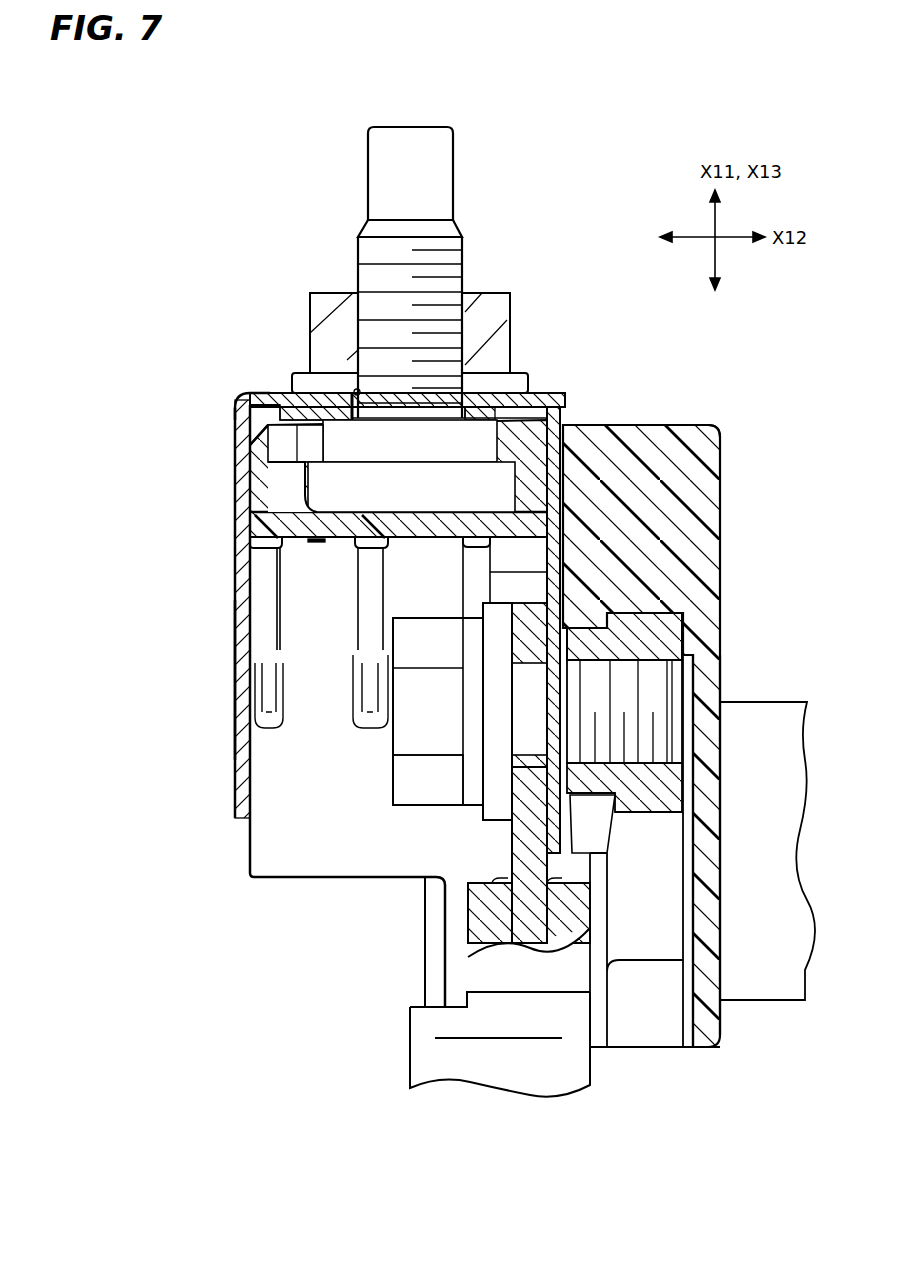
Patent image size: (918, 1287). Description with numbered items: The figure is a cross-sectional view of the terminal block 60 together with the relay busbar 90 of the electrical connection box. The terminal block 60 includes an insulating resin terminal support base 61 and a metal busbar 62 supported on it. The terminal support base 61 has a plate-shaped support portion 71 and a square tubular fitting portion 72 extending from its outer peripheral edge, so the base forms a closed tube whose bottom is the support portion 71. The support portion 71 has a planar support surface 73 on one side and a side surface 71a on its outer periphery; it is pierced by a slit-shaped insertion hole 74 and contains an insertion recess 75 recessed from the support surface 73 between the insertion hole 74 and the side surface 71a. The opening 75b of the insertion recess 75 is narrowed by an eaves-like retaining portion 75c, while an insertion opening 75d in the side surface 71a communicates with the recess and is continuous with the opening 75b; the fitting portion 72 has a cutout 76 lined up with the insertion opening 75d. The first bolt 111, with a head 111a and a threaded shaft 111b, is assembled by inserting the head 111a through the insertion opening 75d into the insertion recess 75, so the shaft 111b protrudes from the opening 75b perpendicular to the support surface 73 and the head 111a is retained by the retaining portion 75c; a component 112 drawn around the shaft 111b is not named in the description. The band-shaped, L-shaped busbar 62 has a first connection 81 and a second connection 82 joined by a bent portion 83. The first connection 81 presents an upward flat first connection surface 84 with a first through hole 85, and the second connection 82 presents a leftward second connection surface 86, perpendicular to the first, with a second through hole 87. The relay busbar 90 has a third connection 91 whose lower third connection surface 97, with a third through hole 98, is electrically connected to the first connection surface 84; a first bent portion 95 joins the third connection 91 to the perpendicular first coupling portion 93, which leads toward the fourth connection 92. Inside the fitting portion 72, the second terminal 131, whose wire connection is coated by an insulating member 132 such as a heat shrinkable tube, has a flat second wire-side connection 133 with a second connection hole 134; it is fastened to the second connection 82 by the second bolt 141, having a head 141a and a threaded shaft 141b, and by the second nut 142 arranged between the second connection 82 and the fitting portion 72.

The terminal block 60 is at (269, 890).
The terminal support base 61 is at (720, 1035).
The busbar 62 is at (280, 410).
The support portion 71 is at (722, 440).
The side surface 71a is at (255, 540).
The fitting portion 72 is at (718, 930).
The support surface 73 is at (683, 425).
The insertion hole 74 is at (540, 497).
The insertion recess 75 is at (413, 514).
The opening 75b is at (497, 432).
The retaining portion 75c is at (520, 395).
The insertion opening 75d is at (260, 512).
The cutout 76 is at (268, 548).
The first connection 81 is at (307, 410).
The second connection 82 is at (562, 812).
The bent portion 83 is at (560, 405).
The first connection surface 84 is at (481, 410).
The first through hole 85 is at (357, 422).
The second connection surface 86 is at (530, 822).
The second through hole 87 is at (553, 785).
The relay busbar 90 is at (243, 800).
The third connection 91 is at (555, 395).
The fourth connection 92 is at (783, 712).
The first coupling portion 93 is at (240, 690).
The first bent portion 95 is at (240, 393).
The third connection surface 97 is at (332, 424).
The third through hole 98 is at (355, 391).
The first bolt 111 is at (455, 130).
The head 111a is at (333, 507).
The shaft 111b is at (462, 247).
The nut 112 is at (510, 300).
The second terminal 131 is at (507, 928).
The insulating member 132 is at (415, 1065).
The second wire-side connection 133 is at (527, 630).
The second connection hole 134 is at (527, 752).
The second bolt 141 is at (405, 808).
The head 141a is at (405, 770).
The shaft 141b is at (640, 760).
The second nut 142 is at (677, 647).